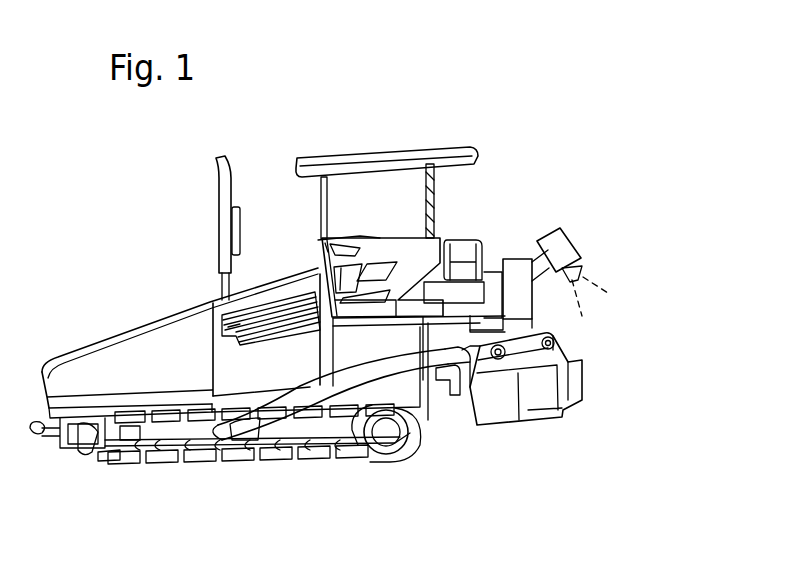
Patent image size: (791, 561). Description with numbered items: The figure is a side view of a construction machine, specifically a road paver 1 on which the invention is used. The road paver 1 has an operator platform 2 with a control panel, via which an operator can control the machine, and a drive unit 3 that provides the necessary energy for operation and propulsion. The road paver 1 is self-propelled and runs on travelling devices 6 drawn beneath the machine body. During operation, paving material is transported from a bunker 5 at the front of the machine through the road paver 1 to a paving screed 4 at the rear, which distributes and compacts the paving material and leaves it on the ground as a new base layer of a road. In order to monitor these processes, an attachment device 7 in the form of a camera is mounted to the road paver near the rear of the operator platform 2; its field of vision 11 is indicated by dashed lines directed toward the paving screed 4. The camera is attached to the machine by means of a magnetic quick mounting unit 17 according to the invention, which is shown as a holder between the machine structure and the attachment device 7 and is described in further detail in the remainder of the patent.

The road paver 1 is at (529, 149).
The operator platform 2 is at (375, 200).
The drive unit 3 is at (305, 300).
The paving screed 4 is at (568, 342).
The bunker 5 is at (105, 362).
The travelling devices 6 is at (312, 432).
The attachment device 7 is at (566, 224).
The field of vision 11 is at (598, 283).
The magnetic quick mounting unit 17 is at (530, 262).